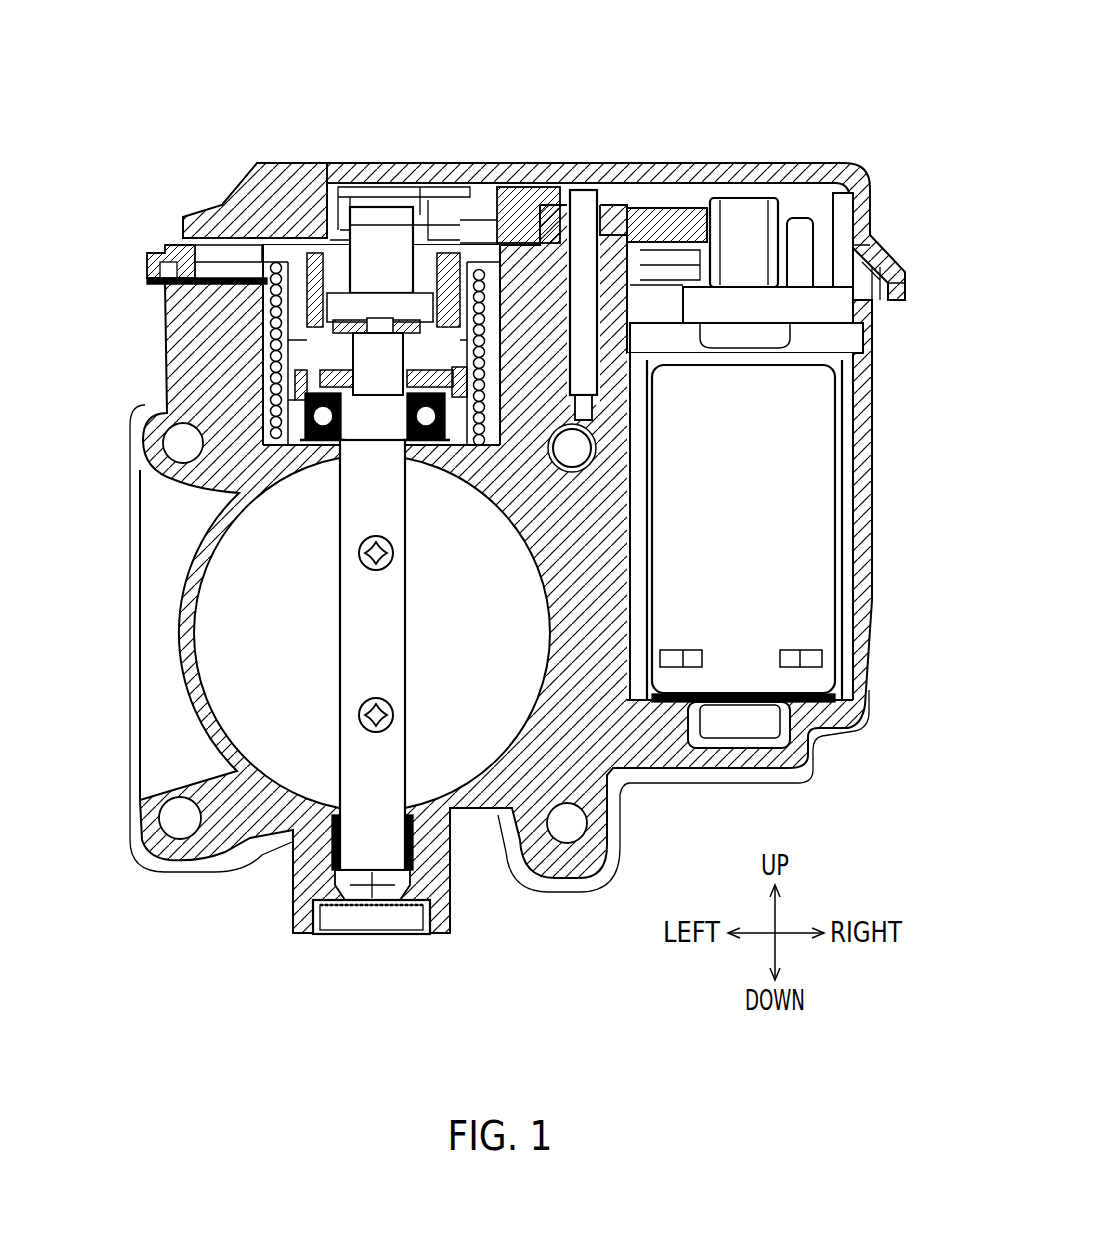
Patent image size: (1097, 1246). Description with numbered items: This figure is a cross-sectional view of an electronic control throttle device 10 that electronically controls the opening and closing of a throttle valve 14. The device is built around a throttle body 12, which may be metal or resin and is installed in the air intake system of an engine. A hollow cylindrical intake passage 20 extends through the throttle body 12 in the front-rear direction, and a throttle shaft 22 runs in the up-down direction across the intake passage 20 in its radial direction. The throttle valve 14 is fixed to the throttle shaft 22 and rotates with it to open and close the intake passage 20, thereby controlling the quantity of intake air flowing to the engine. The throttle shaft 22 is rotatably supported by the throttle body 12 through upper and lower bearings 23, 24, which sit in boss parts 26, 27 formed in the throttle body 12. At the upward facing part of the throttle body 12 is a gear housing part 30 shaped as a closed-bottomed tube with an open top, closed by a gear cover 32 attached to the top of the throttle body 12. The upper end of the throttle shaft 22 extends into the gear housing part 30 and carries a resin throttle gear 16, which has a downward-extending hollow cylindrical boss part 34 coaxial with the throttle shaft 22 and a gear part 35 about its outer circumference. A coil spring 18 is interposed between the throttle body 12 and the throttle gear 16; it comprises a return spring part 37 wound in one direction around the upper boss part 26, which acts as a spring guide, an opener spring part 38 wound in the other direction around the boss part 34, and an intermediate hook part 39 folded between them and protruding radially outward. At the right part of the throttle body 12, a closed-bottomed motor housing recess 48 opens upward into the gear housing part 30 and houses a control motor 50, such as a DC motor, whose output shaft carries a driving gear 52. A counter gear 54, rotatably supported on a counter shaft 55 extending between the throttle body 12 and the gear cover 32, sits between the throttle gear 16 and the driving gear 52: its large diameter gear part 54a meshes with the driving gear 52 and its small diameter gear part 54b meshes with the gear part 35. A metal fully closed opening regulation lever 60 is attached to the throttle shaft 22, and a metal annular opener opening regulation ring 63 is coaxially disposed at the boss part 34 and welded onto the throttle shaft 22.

The throttle device 10 is at (836, 70).
The throttle body 12 is at (118, 790).
The throttle valve 14 is at (243, 635).
The throttle gear 16 is at (277, 250).
The coil spring 18 is at (290, 345).
The intake passage 20 is at (223, 683).
The throttle shaft 22 is at (358, 855).
The upper bearing 23 is at (300, 437).
The lower bearing 24 is at (330, 862).
The upper boss part 26 is at (305, 397).
The lower boss part 27 is at (440, 925).
The gear housing part 30 is at (152, 300).
The gear cover 32 is at (862, 185).
The boss part 34 is at (255, 258).
The gear part 35 is at (548, 183).
The return spring part 37 is at (633, 206).
The opener spring part 38 is at (486, 215).
The intermediate hook part 39 is at (612, 200).
The motor housing recess 48 is at (855, 515).
The control motor 50 is at (806, 582).
The driving gear 52 is at (740, 215).
The counter gear 54 is at (487, 197).
The large diameter gear part 54a is at (450, 208).
The small diameter gear part 54b is at (676, 248).
The counter shaft 55 is at (584, 205).
The fully closed opening regulation lever 60 is at (300, 378).
The opener opening regulation ring 63 is at (340, 300).